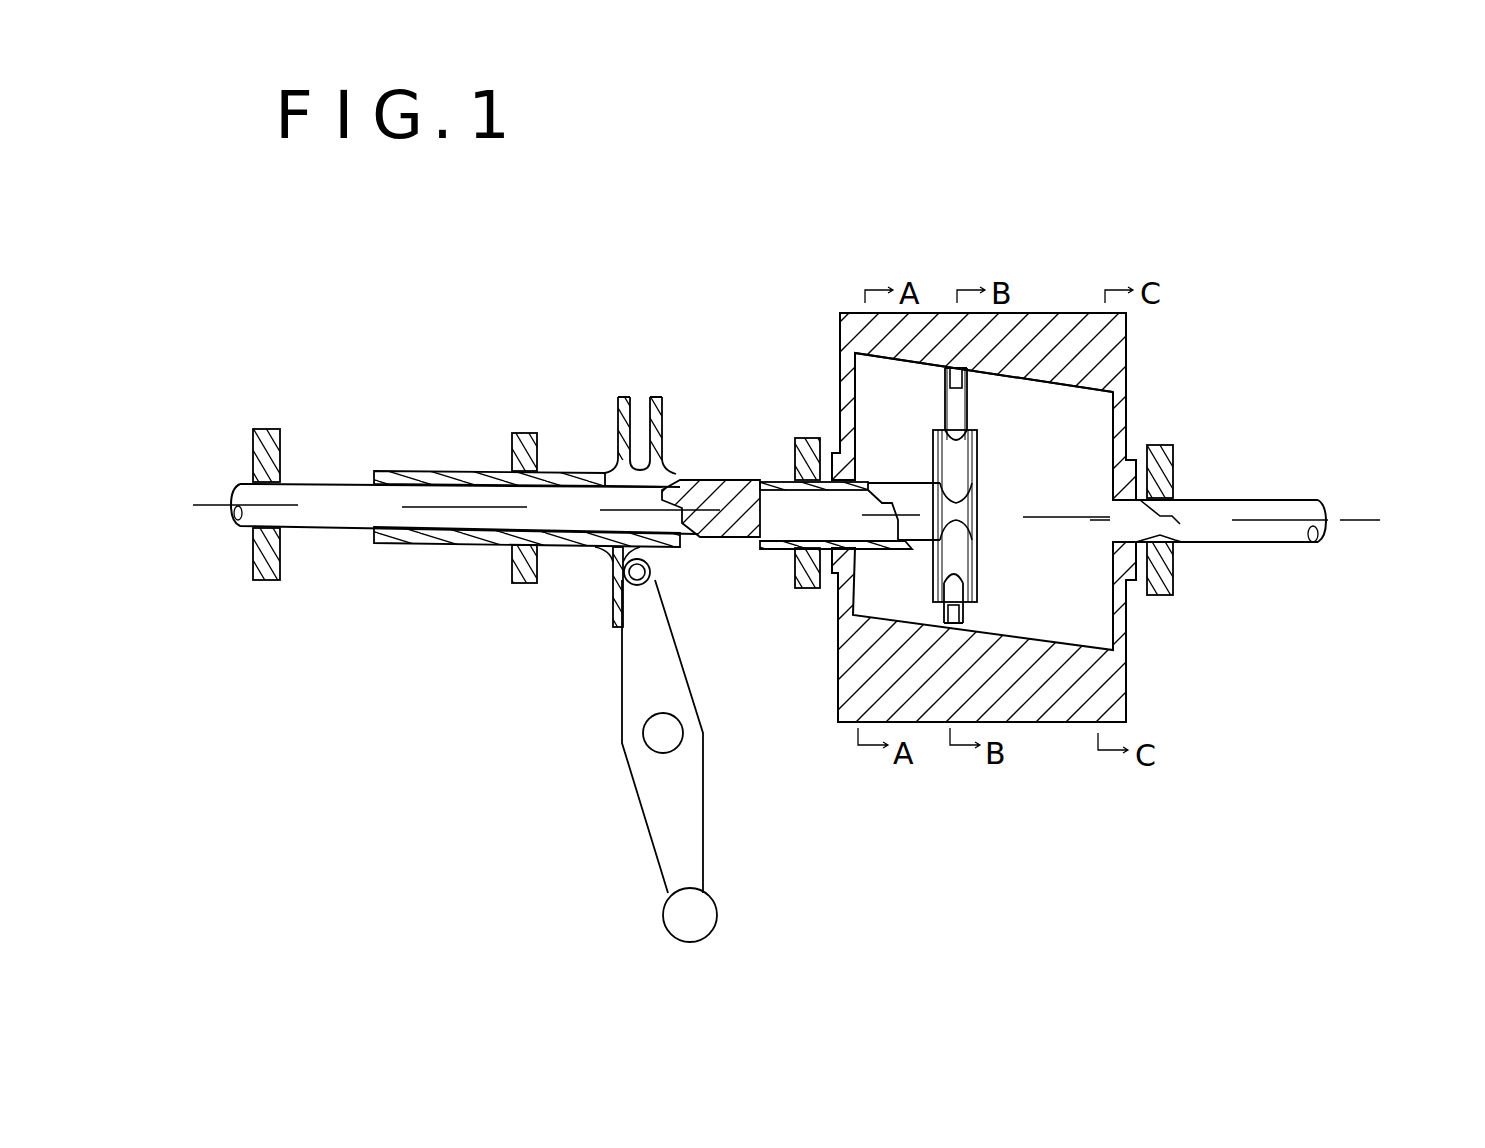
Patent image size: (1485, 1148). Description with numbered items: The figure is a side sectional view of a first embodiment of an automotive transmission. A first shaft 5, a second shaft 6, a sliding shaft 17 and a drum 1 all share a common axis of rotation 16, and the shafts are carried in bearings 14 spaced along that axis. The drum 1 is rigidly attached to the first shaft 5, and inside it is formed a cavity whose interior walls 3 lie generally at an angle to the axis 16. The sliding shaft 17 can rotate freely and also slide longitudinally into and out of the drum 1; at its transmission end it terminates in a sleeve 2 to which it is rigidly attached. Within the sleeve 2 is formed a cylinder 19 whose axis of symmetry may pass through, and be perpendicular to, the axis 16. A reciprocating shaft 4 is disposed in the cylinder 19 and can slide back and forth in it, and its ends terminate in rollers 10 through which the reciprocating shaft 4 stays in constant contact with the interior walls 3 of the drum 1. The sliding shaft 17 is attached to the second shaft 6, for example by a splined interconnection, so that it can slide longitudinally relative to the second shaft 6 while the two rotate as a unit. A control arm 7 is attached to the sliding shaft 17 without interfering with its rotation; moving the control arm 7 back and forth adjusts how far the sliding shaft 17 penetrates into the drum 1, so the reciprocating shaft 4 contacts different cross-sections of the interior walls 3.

The drum 1 is at (1035, 327).
The sleeve 2 is at (940, 463).
The interior walls 3 is at (1058, 385).
The reciprocating shaft 4 is at (950, 408).
The first shaft 5 is at (1203, 508).
The second shaft 6 is at (347, 497).
The control arm 7 is at (663, 800).
The rollers 10 is at (953, 368).
The bearing 14 is at (523, 572).
The axis of rotation 16 is at (1350, 525).
The sliding shaft 17 is at (925, 520).
The cylinder 19 is at (968, 432).